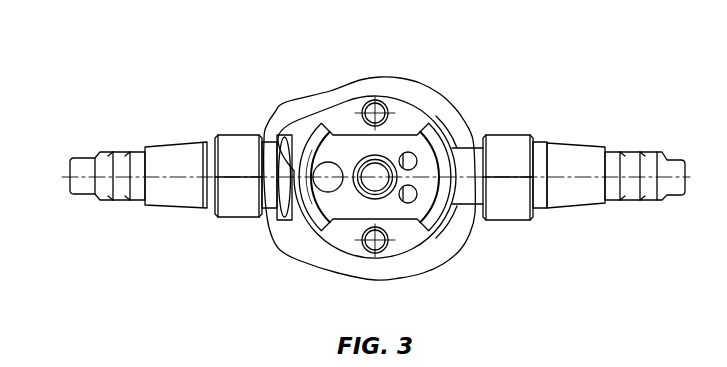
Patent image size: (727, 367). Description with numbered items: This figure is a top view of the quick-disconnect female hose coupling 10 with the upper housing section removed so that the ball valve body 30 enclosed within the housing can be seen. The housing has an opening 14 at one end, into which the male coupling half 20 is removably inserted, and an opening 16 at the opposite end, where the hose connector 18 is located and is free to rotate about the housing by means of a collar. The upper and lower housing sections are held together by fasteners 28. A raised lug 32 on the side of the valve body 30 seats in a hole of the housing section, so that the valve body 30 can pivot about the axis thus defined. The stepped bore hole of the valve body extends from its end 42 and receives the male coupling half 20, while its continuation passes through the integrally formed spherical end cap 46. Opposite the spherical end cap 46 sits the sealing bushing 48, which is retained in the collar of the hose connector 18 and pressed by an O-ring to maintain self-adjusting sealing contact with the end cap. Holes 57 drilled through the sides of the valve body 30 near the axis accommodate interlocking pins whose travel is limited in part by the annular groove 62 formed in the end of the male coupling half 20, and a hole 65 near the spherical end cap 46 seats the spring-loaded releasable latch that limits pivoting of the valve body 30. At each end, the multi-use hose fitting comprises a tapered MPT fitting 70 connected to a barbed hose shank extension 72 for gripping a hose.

The hose coupling 10 is at (480, 58).
The opening 14 is at (472, 121).
The opening 16 is at (268, 140).
The hose connector 18 is at (235, 143).
The male coupling half 20 is at (507, 210).
The fasteners 28 is at (372, 100).
The ball valve body 30 is at (334, 212).
The raised lug 32 is at (383, 160).
The end 42 is at (429, 232).
The spherical end cap 46 is at (337, 212).
The sealing bushing 48 is at (295, 139).
The holes 57 is at (408, 204).
The annular groove 62 is at (414, 155).
The hole 65 is at (322, 205).
The tapered MPT fitting 70 is at (190, 196).
The barbed hose shank extension 72 is at (98, 186).